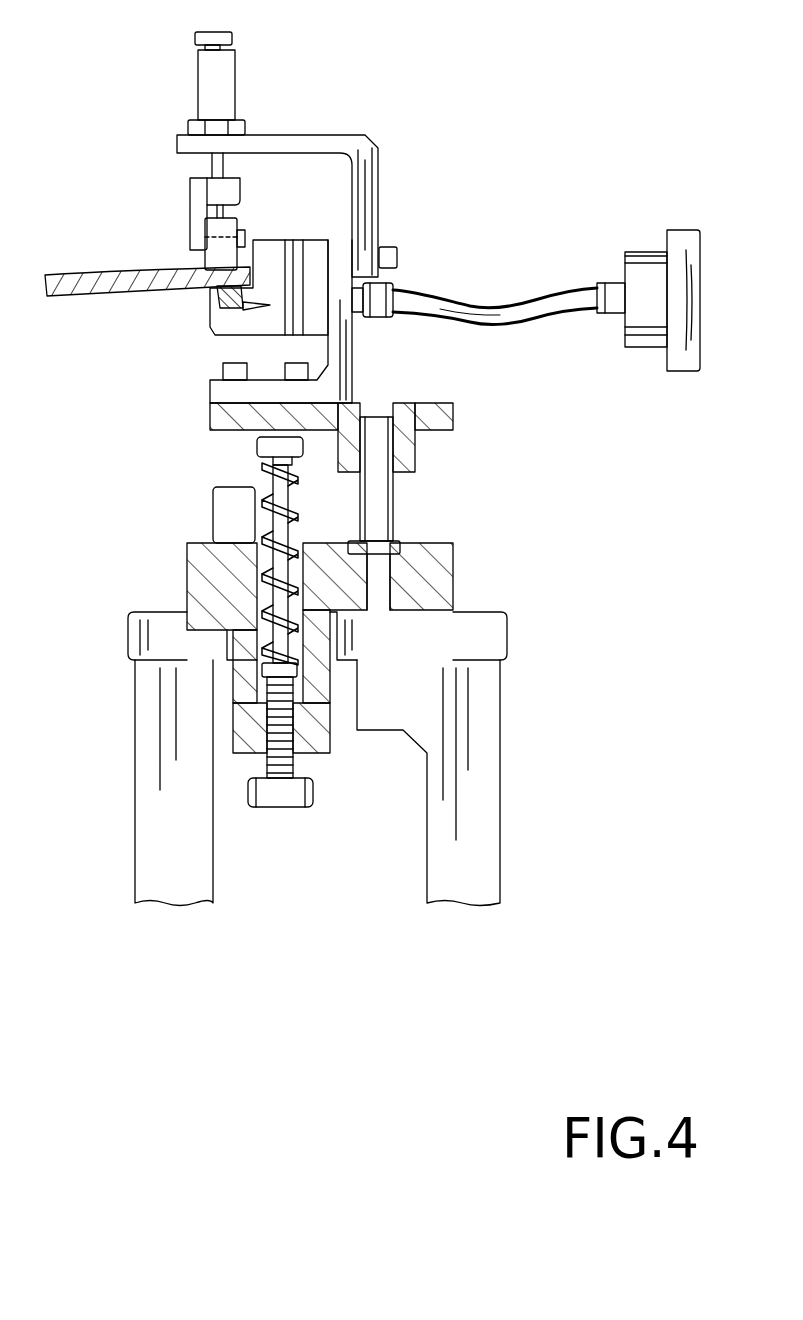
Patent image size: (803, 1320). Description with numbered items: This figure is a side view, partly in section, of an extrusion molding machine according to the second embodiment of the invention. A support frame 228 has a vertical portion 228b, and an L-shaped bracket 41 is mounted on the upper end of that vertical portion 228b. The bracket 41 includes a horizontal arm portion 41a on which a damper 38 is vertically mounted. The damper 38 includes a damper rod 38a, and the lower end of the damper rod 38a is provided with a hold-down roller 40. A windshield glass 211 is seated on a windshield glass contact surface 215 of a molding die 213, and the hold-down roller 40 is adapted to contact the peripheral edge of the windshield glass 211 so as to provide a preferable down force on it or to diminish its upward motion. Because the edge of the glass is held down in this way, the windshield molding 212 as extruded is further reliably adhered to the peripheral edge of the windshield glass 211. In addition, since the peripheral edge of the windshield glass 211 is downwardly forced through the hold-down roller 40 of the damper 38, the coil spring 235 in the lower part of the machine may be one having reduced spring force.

The damper 38 is at (213, 82).
The damper rod 38a is at (210, 168).
The hold-down roller 40 is at (223, 212).
The L-shaped bracket 41 is at (340, 145).
The horizontal arm portion 41a is at (275, 138).
The windshield glass 211 is at (86, 291).
The windshield molding 212 is at (178, 270).
The molding die 213 is at (277, 240).
The windshield glass contact surface 215 is at (210, 273).
The support frame 228 is at (347, 352).
The vertical portion 228b is at (343, 250).
The coil spring 235 is at (257, 548).